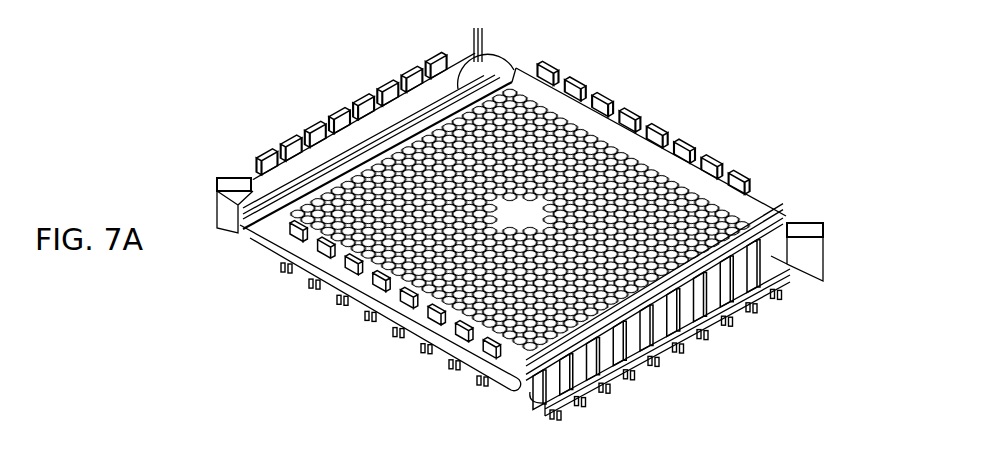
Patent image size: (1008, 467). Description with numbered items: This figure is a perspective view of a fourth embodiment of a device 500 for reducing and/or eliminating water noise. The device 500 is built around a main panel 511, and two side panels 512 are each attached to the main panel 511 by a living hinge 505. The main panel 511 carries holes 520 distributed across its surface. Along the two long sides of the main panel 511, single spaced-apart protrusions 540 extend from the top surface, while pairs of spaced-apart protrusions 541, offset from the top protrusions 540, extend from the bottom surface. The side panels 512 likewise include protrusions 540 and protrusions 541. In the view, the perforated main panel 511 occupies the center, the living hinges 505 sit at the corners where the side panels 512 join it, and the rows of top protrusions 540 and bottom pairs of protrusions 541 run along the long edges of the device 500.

The device for reducing and/or eliminating water noise 500 is at (172, 96).
The living hinge 505 is at (238, 231).
The main panel 511 is at (520, 78).
The side panel 512 is at (460, 60).
The holes 520 is at (708, 342).
The single spaced-apart protrusions 540 is at (402, 302).
The pairs of spaced-apart protrusions 541 is at (454, 362).